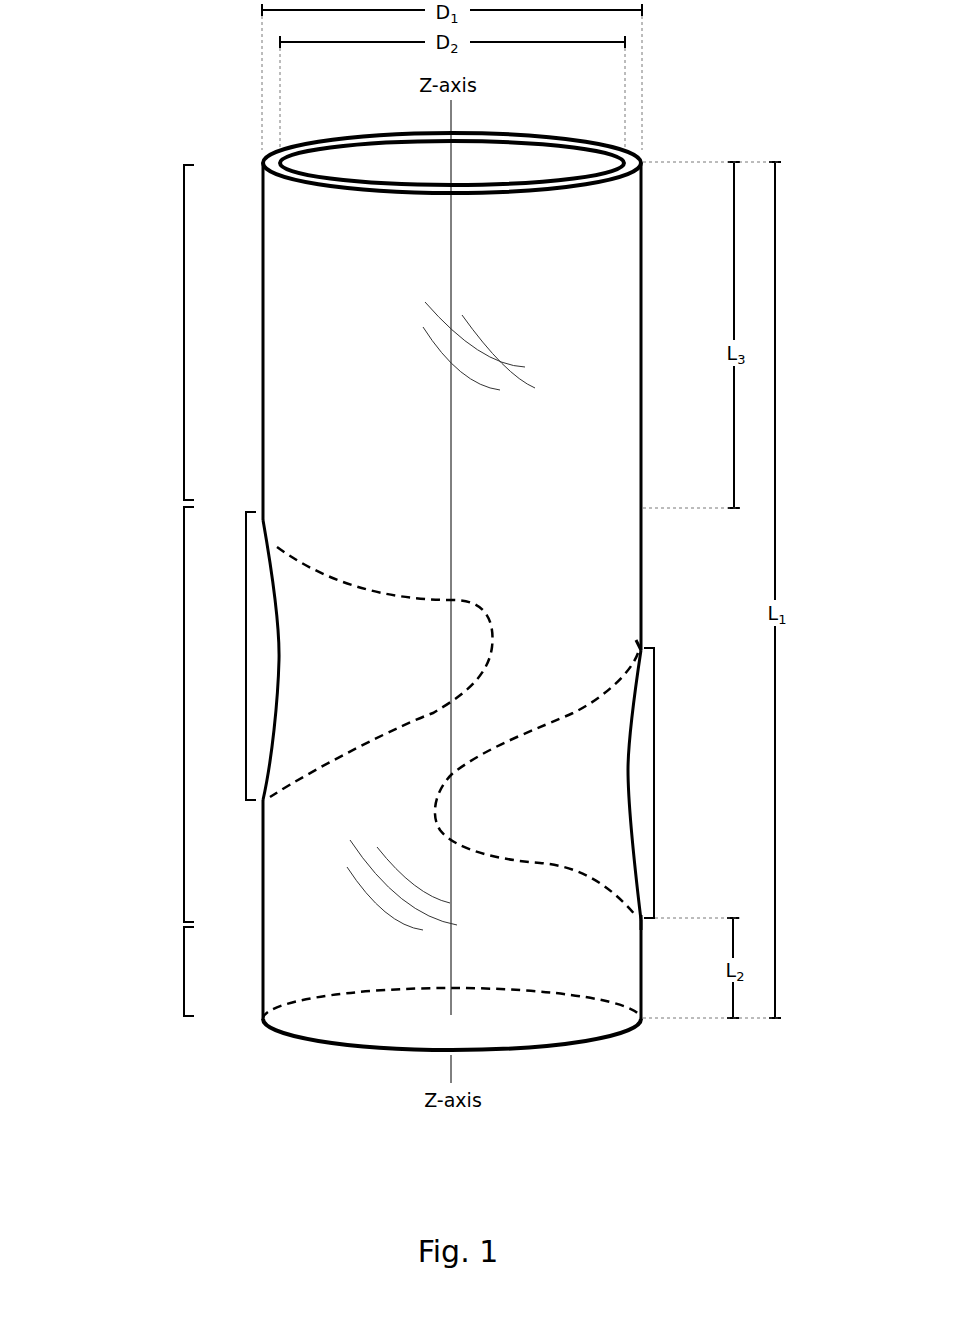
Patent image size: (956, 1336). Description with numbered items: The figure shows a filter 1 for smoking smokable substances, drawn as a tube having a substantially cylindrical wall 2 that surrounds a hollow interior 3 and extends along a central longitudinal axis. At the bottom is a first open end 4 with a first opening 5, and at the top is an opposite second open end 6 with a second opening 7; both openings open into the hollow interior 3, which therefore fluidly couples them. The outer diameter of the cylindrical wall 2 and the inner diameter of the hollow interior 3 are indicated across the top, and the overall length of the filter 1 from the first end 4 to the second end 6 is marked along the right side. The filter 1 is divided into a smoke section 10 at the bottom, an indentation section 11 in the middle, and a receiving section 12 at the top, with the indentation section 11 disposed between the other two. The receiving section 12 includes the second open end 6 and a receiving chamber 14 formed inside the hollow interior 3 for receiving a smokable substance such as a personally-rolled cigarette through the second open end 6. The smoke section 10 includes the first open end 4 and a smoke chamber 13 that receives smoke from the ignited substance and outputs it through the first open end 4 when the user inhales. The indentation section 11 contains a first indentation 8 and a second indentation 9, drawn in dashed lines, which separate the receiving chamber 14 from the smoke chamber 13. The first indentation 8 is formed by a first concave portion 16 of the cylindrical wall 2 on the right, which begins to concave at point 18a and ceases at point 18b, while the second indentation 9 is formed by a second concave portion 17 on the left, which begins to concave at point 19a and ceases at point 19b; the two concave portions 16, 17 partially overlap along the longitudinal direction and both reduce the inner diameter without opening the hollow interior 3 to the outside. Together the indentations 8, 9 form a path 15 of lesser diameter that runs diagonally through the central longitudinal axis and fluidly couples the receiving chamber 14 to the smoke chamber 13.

The filter 1 is at (127, 50).
The cylindrical wall 2 is at (643, 408).
The hollow interior 3 is at (575, 383).
The first open end 4 is at (648, 1022).
The first opening 5 is at (562, 1058).
The second open end 6 is at (647, 157).
The second opening 7 is at (520, 118).
The first indentation 8 is at (536, 785).
The second indentation 9 is at (381, 672).
The smoke section 10 is at (184, 962).
The indentation section 11 is at (184, 720).
The receiving section 12 is at (184, 345).
The smoke chamber 13 is at (427, 897).
The receiving chamber 14 is at (467, 365).
The path 15 is at (507, 687).
The first concave portion 16 is at (654, 781).
The second concave portion 17 is at (246, 658).
The point where first concave portion begins to concave 18a is at (630, 930).
The point where first concave portion ceases to concave 18b is at (637, 652).
The point where second concave portion begins to concave 19a is at (278, 810).
The point where second concave portion ceases to concave 19b is at (272, 517).